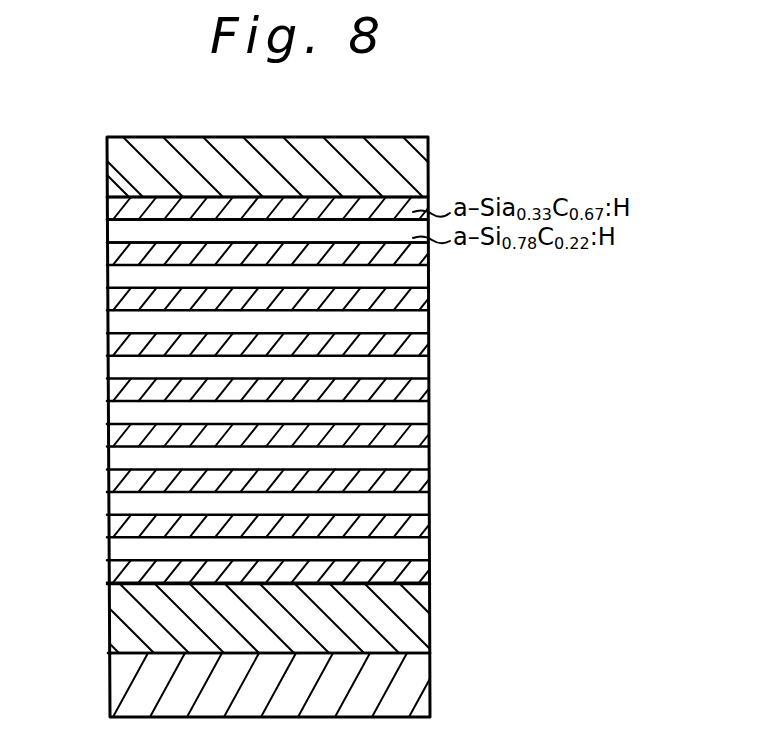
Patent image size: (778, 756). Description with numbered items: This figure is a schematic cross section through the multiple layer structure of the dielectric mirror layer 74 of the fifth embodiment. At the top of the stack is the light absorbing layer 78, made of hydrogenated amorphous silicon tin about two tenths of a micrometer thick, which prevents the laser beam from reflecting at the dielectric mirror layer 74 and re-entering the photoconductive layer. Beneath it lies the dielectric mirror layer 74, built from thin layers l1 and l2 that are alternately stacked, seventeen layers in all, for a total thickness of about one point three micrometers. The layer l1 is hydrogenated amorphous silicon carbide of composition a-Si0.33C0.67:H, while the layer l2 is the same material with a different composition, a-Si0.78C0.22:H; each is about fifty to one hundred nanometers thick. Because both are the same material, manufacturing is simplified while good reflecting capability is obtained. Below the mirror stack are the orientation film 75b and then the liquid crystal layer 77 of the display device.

The light absorbing layer 78 is at (388, 152).
The dielectric mirror layer 74 is at (63, 198).
The orientation film 75b is at (420, 630).
The liquid crystal layer 77 is at (417, 685).
The layer l1 is at (108, 206).
The layer l2 is at (117, 226).